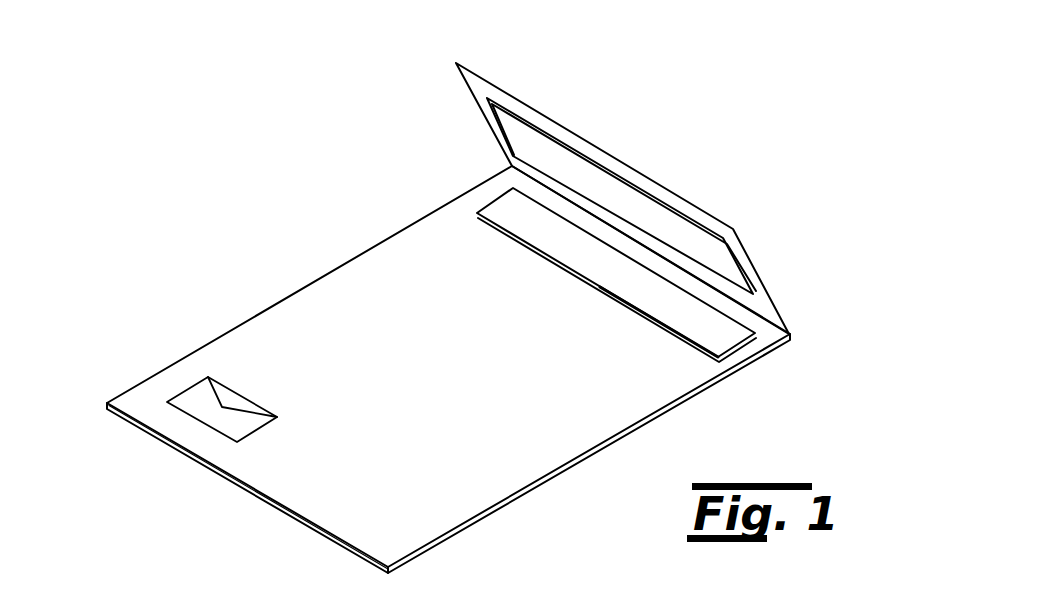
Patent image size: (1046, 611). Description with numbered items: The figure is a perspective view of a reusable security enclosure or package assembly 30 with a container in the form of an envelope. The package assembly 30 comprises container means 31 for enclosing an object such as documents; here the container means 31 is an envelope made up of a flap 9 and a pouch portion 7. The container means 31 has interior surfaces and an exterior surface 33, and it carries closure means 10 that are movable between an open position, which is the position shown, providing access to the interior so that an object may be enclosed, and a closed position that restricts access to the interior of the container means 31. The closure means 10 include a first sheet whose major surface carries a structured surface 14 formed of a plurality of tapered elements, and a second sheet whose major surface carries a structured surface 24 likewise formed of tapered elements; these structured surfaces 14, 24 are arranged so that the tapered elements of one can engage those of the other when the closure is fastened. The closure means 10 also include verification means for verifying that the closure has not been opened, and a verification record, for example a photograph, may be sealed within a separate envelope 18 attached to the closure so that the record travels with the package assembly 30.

The pouch portion 7 is at (522, 473).
The flap 9 is at (517, 137).
The closure means 10 is at (415, 144).
The structured surface 14 is at (610, 200).
The envelope 18 is at (235, 423).
The structured surface 24 is at (687, 303).
The package assembly 30 is at (280, 125).
The container means 31 is at (177, 362).
The exterior surface 33 is at (287, 323).